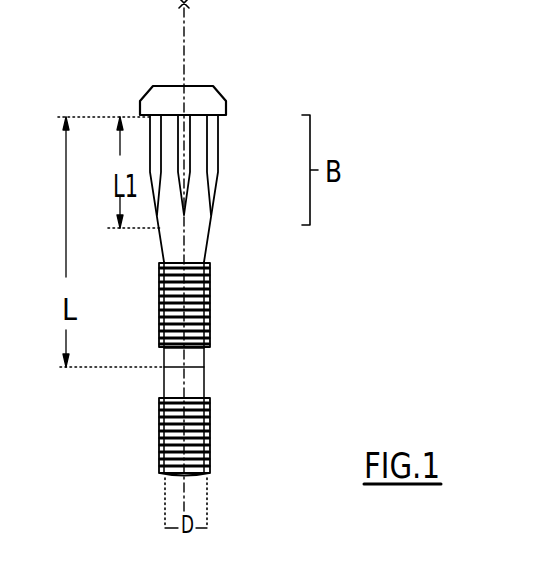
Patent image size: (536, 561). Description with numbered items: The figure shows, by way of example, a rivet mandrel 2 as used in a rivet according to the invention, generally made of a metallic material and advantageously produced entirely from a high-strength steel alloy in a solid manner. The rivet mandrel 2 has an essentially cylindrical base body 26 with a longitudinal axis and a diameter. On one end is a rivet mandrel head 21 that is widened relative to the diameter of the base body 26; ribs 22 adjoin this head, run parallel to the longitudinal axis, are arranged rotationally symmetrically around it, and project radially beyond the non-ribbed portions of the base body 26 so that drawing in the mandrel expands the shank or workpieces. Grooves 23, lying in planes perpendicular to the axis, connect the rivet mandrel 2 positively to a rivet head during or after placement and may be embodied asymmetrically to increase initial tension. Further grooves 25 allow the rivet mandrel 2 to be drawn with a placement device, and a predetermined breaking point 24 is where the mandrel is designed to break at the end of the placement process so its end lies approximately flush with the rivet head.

The rivet mandrel 2 is at (152, 413).
The rivet mandrel head 21 is at (212, 101).
The ribs 22 is at (188, 185).
The grooves 23 is at (210, 296).
The predetermined breaking point 24 is at (194, 375).
The grooves 25 is at (210, 429).
The base body 26 is at (208, 473).